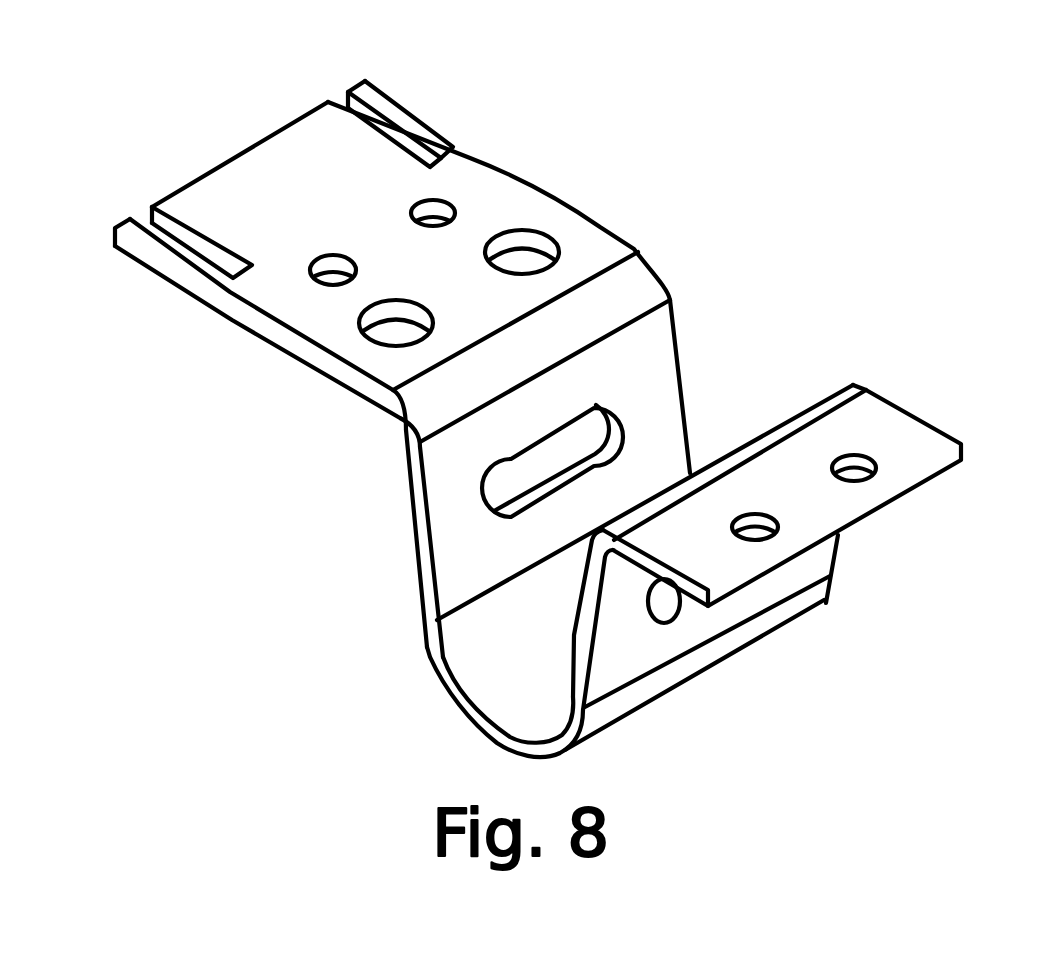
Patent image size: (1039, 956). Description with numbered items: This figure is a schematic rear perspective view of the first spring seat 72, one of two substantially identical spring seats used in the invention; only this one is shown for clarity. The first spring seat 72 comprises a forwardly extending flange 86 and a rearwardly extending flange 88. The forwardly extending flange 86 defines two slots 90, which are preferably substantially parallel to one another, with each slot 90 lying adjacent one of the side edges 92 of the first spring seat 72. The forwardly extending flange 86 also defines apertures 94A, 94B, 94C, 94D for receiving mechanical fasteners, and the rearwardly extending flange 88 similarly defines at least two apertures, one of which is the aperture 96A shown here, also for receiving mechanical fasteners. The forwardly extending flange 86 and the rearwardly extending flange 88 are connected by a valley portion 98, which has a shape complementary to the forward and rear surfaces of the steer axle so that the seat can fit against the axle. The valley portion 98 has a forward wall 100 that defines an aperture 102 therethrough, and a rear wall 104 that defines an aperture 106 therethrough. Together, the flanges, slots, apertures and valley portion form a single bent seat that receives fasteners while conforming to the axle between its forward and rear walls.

The first spring seat 72 is at (482, 200).
The forwardly extending flange 86 is at (232, 134).
The rearwardly extending flange 88 is at (867, 535).
The slot 90 is at (336, 90).
The side edge 92 is at (397, 113).
The aperture 94A is at (428, 208).
The aperture 94B is at (333, 270).
The aperture 94C is at (510, 262).
The aperture 94D is at (393, 330).
The aperture 96A is at (847, 478).
The valley portion 98 is at (412, 640).
The forward wall 100 is at (460, 552).
The aperture 102 is at (504, 484).
The rear wall 104 is at (628, 642).
The aperture 106 is at (663, 593).